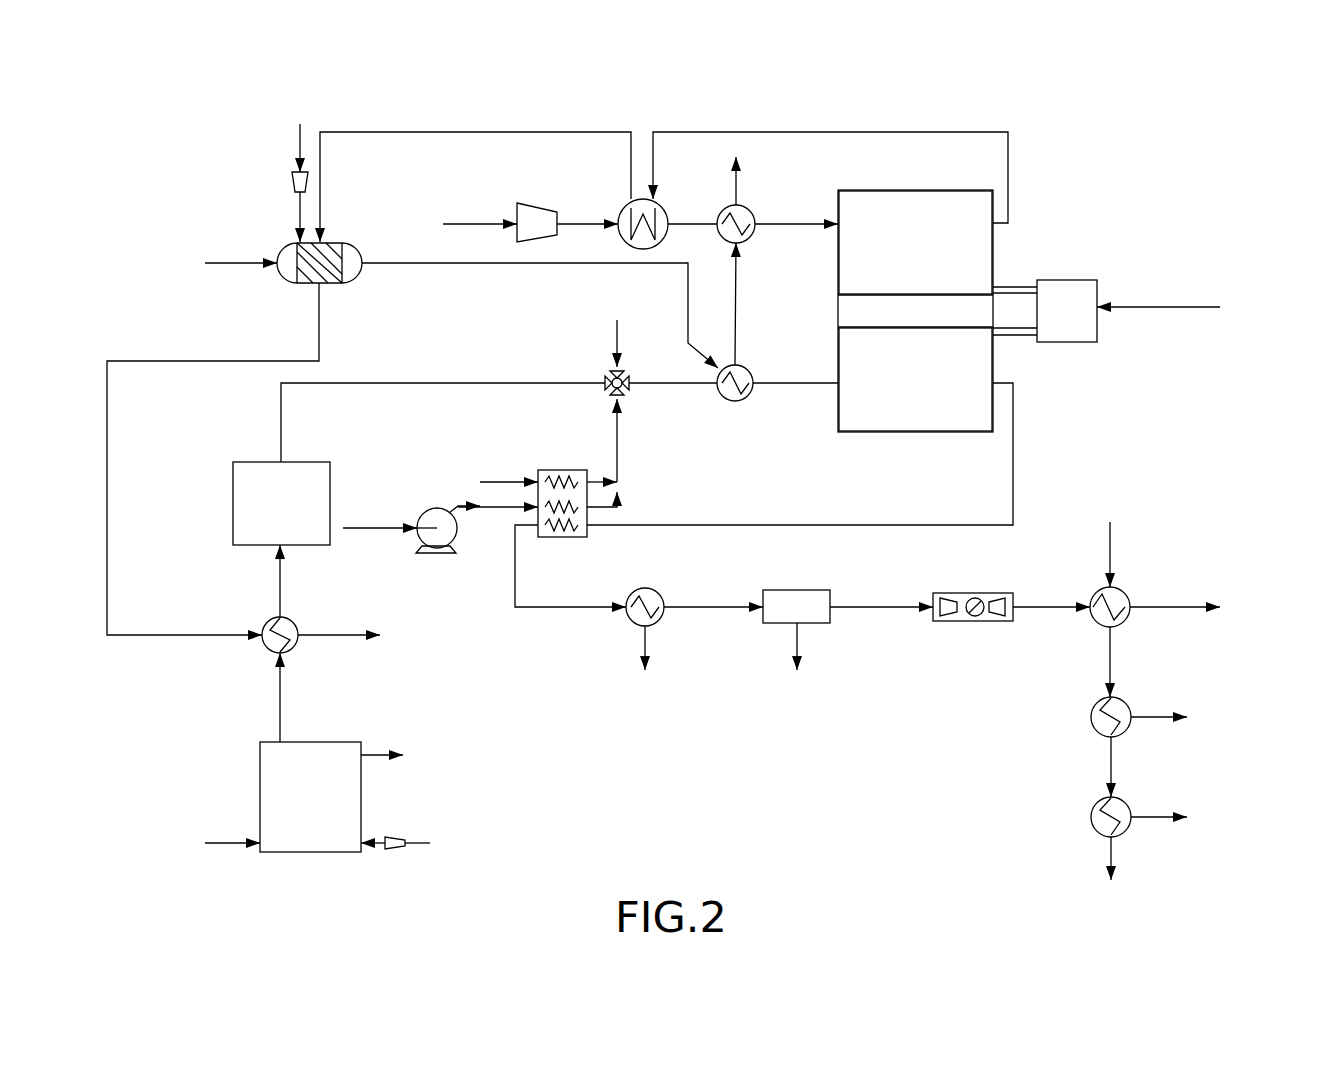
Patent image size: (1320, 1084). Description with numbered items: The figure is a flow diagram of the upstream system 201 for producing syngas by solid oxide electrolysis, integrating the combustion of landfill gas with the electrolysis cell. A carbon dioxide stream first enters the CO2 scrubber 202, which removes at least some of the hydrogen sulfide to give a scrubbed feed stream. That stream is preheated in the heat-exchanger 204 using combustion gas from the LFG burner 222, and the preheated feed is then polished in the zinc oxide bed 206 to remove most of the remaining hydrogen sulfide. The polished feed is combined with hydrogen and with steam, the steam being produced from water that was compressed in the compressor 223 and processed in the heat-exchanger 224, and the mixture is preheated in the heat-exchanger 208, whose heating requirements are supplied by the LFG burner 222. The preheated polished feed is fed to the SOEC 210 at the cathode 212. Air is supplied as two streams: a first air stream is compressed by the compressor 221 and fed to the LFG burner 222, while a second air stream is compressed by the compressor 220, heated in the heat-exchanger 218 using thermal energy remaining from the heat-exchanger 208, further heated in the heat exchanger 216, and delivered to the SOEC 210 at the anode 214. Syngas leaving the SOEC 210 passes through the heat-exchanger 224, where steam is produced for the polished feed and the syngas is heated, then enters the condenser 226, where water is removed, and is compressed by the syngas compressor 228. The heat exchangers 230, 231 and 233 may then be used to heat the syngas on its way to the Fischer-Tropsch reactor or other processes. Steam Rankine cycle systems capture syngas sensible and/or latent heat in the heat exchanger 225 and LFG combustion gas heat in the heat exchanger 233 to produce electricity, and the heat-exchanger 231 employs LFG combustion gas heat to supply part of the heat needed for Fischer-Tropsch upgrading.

The upstream system 201 is at (687, 787).
The CO2 scrubber 202 is at (260, 786).
The heat-exchanger 204 is at (262, 628).
The zinc oxide bed 206 is at (233, 474).
The heat-exchanger 208 is at (747, 396).
The SOEC 210 is at (838, 302).
The cathode 212 is at (993, 368).
The anode 214 is at (993, 258).
The heat exchanger 216 is at (618, 215).
The heat-exchanger 218 is at (728, 208).
The compressor 220 is at (517, 210).
The compressor 221 is at (290, 178).
The LFG burner 222 is at (285, 250).
The compressor 223 is at (440, 553).
The heat-exchanger 224 is at (540, 470).
The heat exchanger 225 is at (628, 612).
The condenser 226 is at (765, 623).
The syngas compressor 228 is at (945, 621).
The heat exchanger 230 is at (1128, 597).
The heat-exchanger 231 is at (1093, 726).
The heat exchanger 233 is at (1093, 826).